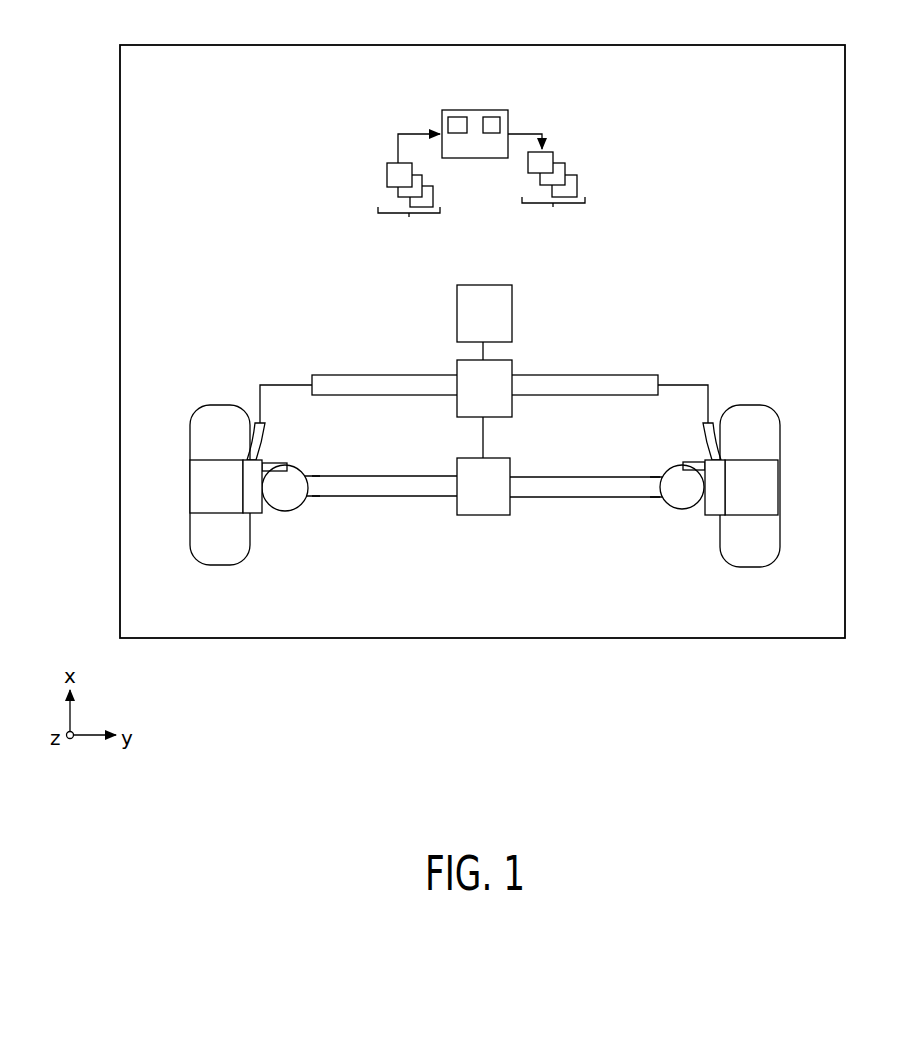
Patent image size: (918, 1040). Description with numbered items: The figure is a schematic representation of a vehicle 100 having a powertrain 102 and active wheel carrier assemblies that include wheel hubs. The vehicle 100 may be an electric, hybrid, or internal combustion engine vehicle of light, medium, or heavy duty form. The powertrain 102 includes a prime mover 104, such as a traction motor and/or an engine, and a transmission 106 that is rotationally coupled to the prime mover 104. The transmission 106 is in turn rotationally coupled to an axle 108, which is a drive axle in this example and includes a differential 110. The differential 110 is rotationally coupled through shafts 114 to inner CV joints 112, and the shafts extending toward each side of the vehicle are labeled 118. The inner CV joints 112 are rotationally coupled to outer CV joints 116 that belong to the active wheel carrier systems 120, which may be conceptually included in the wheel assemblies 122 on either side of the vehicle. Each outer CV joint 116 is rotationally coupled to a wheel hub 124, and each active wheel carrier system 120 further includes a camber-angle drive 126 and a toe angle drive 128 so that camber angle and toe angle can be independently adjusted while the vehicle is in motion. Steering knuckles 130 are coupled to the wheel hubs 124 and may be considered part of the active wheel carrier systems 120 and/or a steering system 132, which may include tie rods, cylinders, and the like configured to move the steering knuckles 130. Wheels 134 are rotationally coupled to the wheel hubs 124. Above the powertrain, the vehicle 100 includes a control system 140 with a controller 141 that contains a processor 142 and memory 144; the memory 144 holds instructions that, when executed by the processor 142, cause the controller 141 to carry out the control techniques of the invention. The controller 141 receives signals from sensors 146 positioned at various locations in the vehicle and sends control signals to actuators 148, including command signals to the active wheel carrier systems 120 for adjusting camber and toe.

The vehicle 100 is at (170, 45).
The powertrain 102 is at (631, 250).
The prime mover 104 is at (540, 303).
The transmission 106 is at (540, 353).
The axle 108 is at (775, 589).
The differential 110 is at (497, 463).
The CV joints 112 is at (303, 472).
The shafts 114 is at (444, 483).
The outer CV joints 116 is at (257, 503).
The drive shaft 118 is at (367, 487).
The active wheel carrier systems 120 is at (287, 527).
The wheel assemblies 122 is at (166, 549).
The wheel hubs 124 is at (205, 477).
The camber-angle drive 126 is at (293, 475).
The toe angle drive 128 is at (290, 462).
The steering knuckles 130 is at (258, 425).
The steering system 132 is at (679, 352).
The wheels 134 is at (190, 447).
The control system 140 is at (361, 118).
The controller 141 is at (464, 110).
The processor 142 is at (448, 124).
The memory 144 is at (500, 125).
The sensors 146 is at (409, 191).
The actuators 148 is at (546, 183).